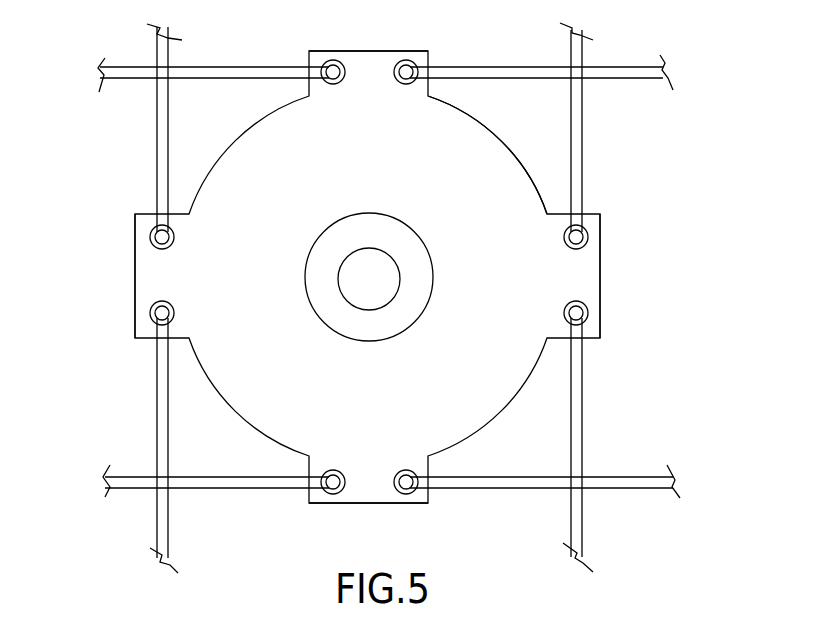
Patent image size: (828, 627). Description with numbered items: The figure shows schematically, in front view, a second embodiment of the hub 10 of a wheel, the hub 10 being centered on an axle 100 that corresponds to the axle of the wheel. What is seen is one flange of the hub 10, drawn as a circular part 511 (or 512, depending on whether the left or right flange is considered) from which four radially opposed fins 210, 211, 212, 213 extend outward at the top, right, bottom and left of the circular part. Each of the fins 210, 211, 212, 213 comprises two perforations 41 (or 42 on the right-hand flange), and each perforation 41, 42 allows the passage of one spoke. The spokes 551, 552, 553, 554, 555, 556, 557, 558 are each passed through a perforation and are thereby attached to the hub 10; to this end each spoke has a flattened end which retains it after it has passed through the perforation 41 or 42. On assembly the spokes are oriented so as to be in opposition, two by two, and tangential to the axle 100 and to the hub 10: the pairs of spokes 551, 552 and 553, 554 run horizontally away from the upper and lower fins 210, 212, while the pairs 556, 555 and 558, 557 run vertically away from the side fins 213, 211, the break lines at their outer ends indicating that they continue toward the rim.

The hub 10 is at (343, 248).
The axle 100 is at (358, 282).
The fin 210 is at (352, 57).
The fin 211 is at (585, 272).
The fin 212 is at (385, 497).
The fin 213 is at (140, 283).
The perforation 41 is at (403, 63).
The perforation 42 is at (369, 277).
The circular part of left flange 511 is at (488, 173).
The circular part of right flange 512 is at (367, 277).
The spoke 551 is at (130, 73).
The spoke 552 is at (633, 72).
The spoke 553 is at (135, 478).
The spoke 554 is at (610, 485).
The spoke 555 is at (158, 515).
The spoke 556 is at (165, 118).
The spoke 557 is at (577, 520).
The spoke 558 is at (575, 115).